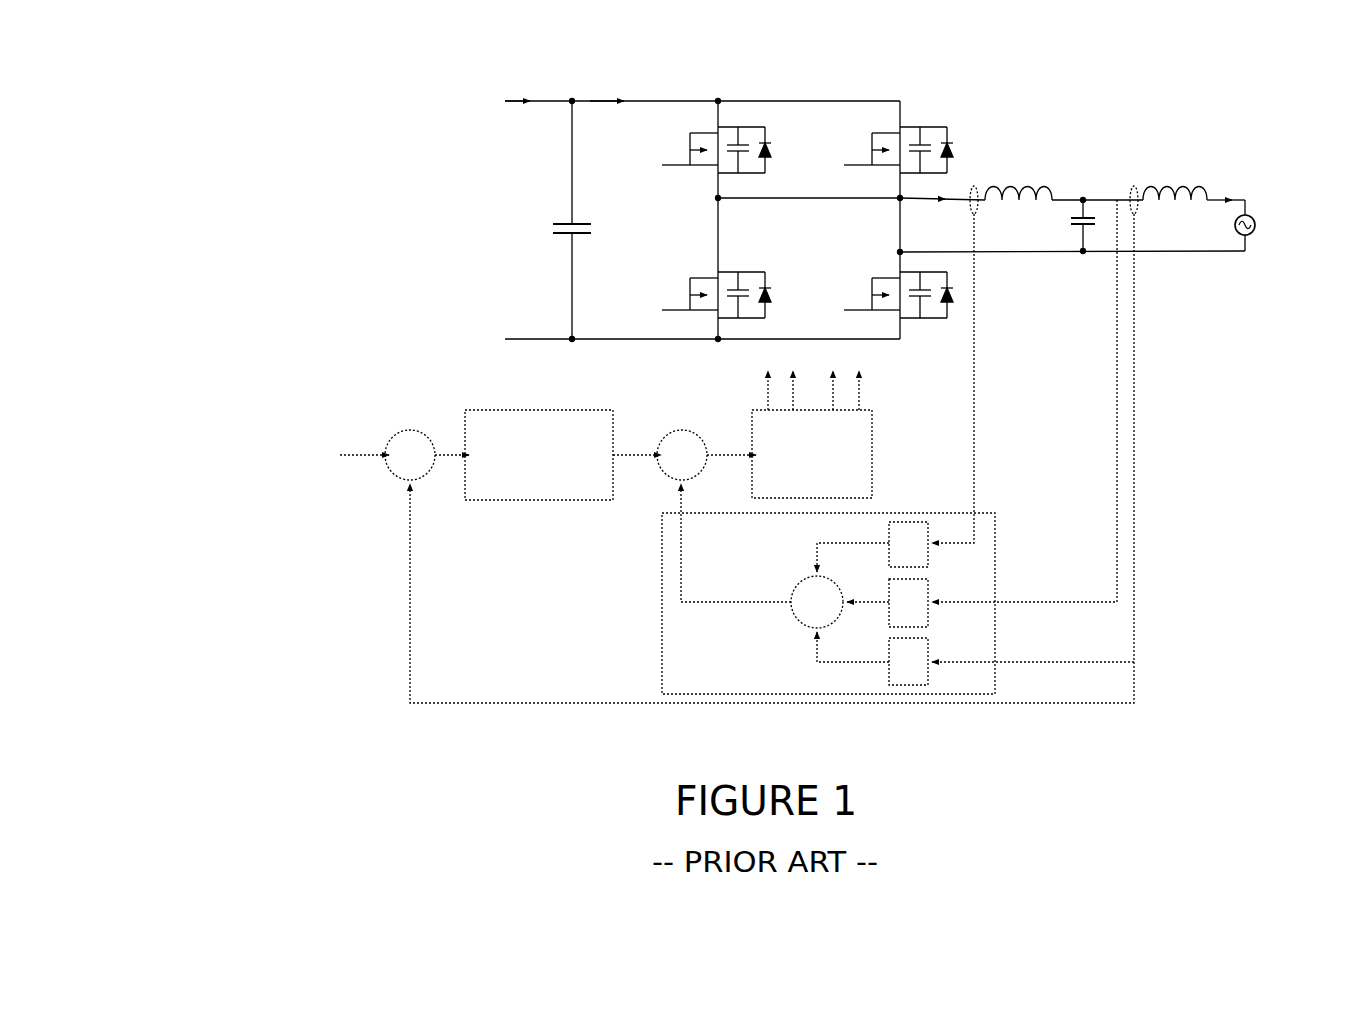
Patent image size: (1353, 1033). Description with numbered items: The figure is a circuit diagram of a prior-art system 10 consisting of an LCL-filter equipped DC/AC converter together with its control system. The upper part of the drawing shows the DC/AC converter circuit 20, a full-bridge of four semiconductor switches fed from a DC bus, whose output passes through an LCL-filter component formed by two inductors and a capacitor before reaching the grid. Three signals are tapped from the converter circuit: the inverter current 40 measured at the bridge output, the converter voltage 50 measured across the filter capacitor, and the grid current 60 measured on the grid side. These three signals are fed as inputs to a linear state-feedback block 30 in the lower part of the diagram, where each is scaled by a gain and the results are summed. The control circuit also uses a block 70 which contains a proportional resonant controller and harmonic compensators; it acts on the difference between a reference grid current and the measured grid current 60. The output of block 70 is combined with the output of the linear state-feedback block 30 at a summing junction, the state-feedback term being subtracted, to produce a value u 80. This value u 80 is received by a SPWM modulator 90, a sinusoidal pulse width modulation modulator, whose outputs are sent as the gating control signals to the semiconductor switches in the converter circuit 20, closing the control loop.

The system 10 is at (385, 187).
The DC/AC converter circuit 20 is at (1048, 120).
The linear state-feedback block 30 is at (662, 660).
The inverter current 40 is at (976, 405).
The converter voltage 50 is at (1115, 468).
The grid current 60 is at (1135, 522).
The block containing a proportional resonant controller and harmonic compensators 70 is at (530, 506).
The value u 80 is at (727, 440).
The SPWM modulator 90 is at (874, 462).